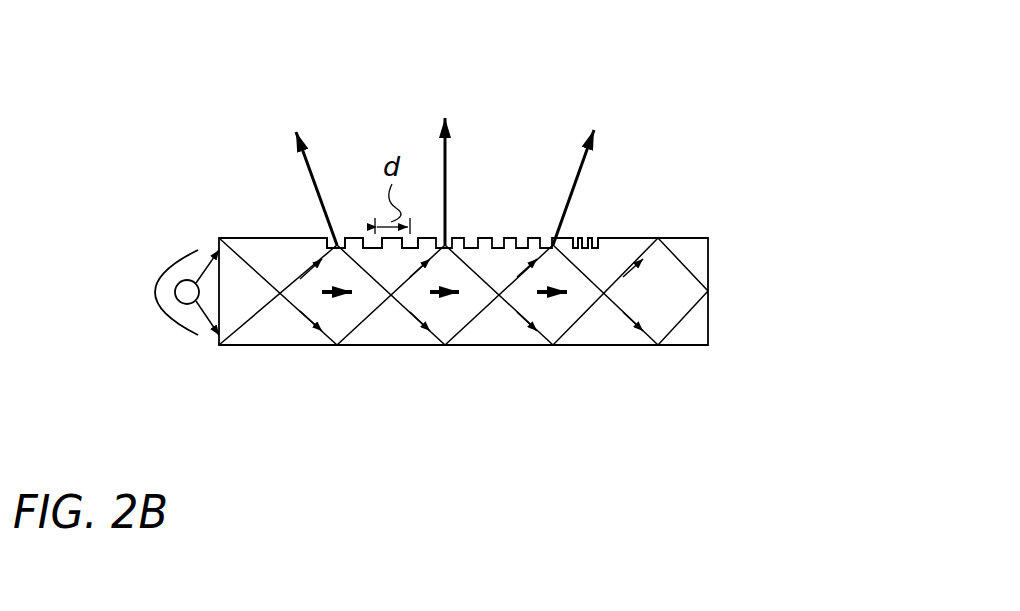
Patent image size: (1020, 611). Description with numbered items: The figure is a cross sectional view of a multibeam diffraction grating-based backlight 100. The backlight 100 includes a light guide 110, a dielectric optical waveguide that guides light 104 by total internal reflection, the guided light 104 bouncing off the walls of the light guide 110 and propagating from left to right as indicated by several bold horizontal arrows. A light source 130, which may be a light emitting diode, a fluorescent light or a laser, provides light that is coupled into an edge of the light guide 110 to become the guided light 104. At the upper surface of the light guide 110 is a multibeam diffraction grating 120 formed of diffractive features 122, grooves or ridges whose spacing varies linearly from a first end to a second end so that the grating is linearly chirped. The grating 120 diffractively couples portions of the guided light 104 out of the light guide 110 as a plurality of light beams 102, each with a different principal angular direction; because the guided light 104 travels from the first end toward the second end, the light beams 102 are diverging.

The multibeam diffraction grating-based backlight 100 is at (725, 87).
The light beams 102 is at (615, 162).
The guided light 104 is at (288, 313).
The light guide 110 is at (710, 290).
The multibeam diffraction grating 120 is at (323, 230).
The diffractive features 122 is at (475, 230).
The light source 130 is at (177, 355).